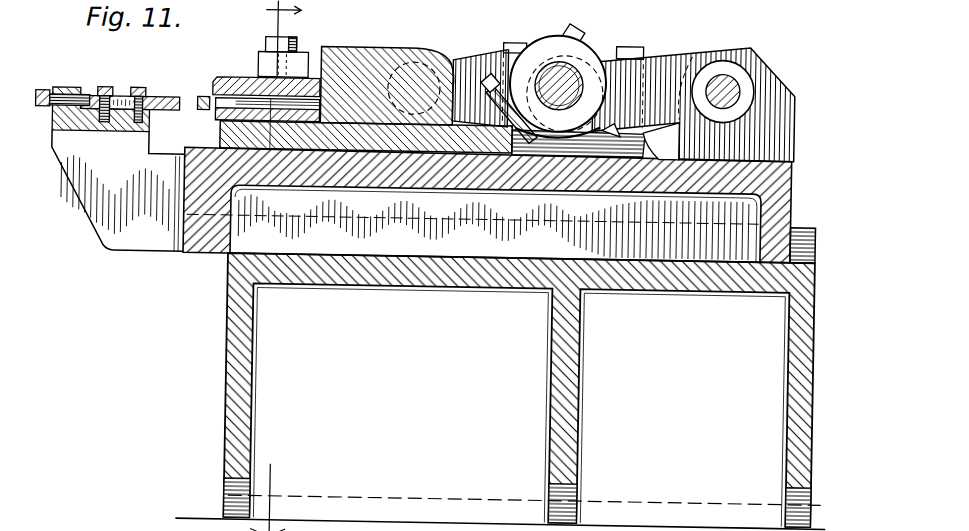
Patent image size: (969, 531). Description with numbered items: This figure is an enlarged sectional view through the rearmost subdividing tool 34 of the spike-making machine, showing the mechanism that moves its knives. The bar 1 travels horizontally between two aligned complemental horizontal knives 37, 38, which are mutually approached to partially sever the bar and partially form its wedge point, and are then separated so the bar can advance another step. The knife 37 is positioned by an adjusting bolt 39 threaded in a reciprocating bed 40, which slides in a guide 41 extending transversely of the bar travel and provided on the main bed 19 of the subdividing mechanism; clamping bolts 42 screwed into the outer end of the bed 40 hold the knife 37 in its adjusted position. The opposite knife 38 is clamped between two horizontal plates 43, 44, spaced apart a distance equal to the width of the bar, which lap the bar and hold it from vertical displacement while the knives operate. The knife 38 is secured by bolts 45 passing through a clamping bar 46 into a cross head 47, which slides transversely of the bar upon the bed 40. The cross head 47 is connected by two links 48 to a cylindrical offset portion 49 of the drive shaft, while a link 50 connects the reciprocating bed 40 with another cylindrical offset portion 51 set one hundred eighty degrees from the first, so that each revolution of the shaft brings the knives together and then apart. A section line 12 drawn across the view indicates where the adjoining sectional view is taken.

The bar 1 is at (196, 108).
The pivot 12 is at (270, 265).
The bed 19 is at (228, 365).
The rearmost subdividing tool 34 is at (70, 136).
The knife 37 is at (172, 98).
The knife 38 is at (218, 134).
The adjusting bolt 39 is at (40, 93).
The bed 40 is at (140, 240).
The guide 41 is at (803, 218).
The clamping bolts 42 is at (135, 89).
The horizontal plate 43 is at (233, 77).
The horizontal plate 44 is at (220, 77).
The bolts 45 is at (292, 40).
The clamping bar 46 is at (319, 46).
The cross head 47 is at (410, 45).
The links 48 is at (478, 55).
The cylindrical offset portion 49 is at (630, 55).
The link 50 is at (662, 58).
The cylindrical offset portion 51 is at (546, 64).